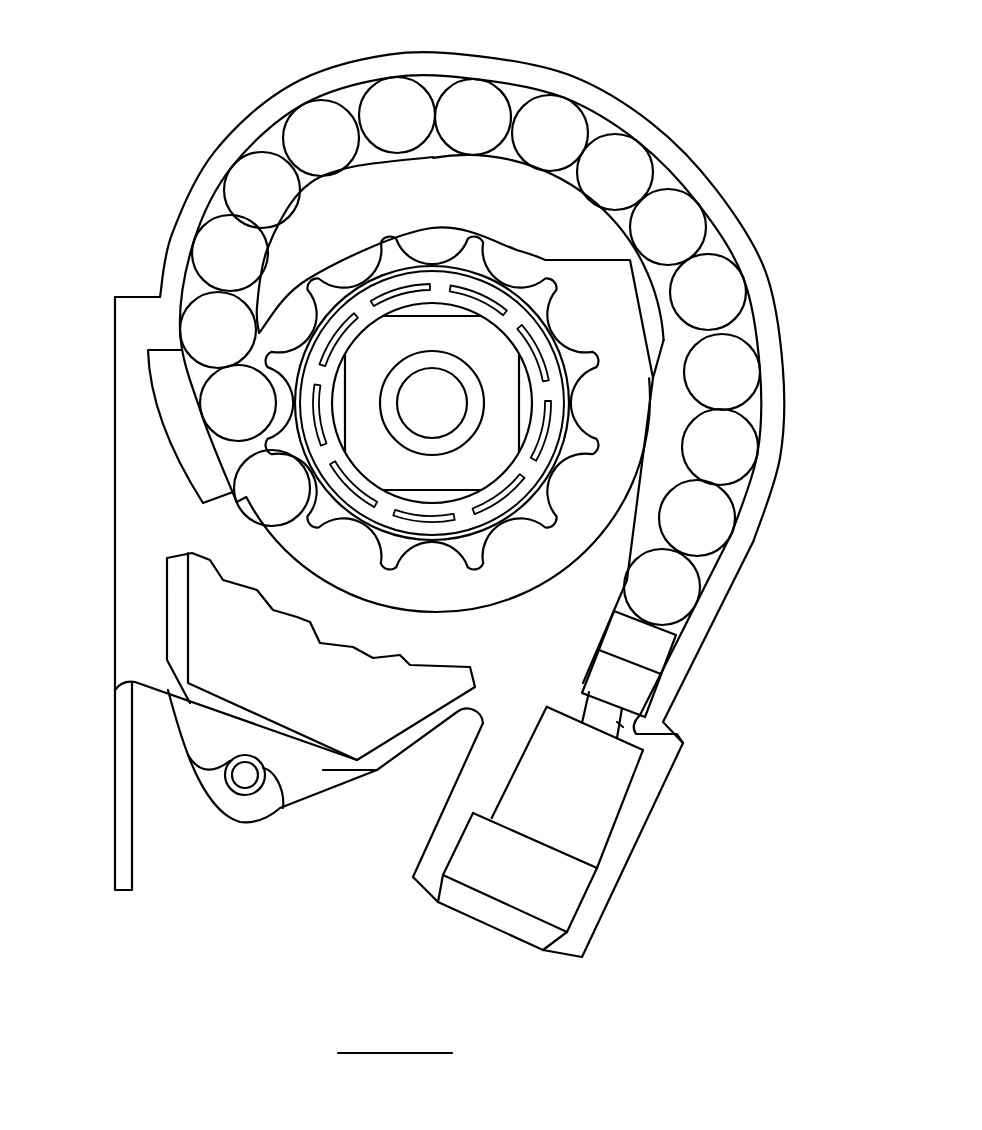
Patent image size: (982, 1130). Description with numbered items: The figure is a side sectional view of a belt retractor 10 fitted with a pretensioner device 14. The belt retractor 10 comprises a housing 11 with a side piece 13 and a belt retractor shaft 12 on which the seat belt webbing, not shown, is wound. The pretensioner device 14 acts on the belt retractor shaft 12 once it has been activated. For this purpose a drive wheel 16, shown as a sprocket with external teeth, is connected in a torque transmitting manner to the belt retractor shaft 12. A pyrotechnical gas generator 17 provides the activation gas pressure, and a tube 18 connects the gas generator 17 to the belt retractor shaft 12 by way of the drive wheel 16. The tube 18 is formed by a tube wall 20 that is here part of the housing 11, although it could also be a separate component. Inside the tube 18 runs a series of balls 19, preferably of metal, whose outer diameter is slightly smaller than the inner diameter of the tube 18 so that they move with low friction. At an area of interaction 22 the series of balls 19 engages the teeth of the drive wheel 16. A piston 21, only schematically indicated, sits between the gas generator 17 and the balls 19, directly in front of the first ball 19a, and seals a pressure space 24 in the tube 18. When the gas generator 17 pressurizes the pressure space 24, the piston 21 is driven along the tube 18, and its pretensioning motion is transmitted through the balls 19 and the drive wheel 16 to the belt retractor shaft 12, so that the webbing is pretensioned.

The belt retractor 10 is at (253, 55).
The housing 11 is at (672, 130).
The belt retractor shaft 12 is at (447, 393).
The side piece 13 is at (141, 518).
The pretensioner device 14 is at (603, 113).
The drive wheel 16 is at (663, 300).
The pyrotechnical gas generator 17 is at (613, 813).
The tube 18 is at (783, 458).
The series of balls 19 is at (713, 525).
The first ball 19a is at (687, 597).
The tube wall 20 is at (748, 332).
The piston 21 is at (690, 667).
The area of interaction 22 is at (200, 408).
The pressure space 24 is at (673, 733).